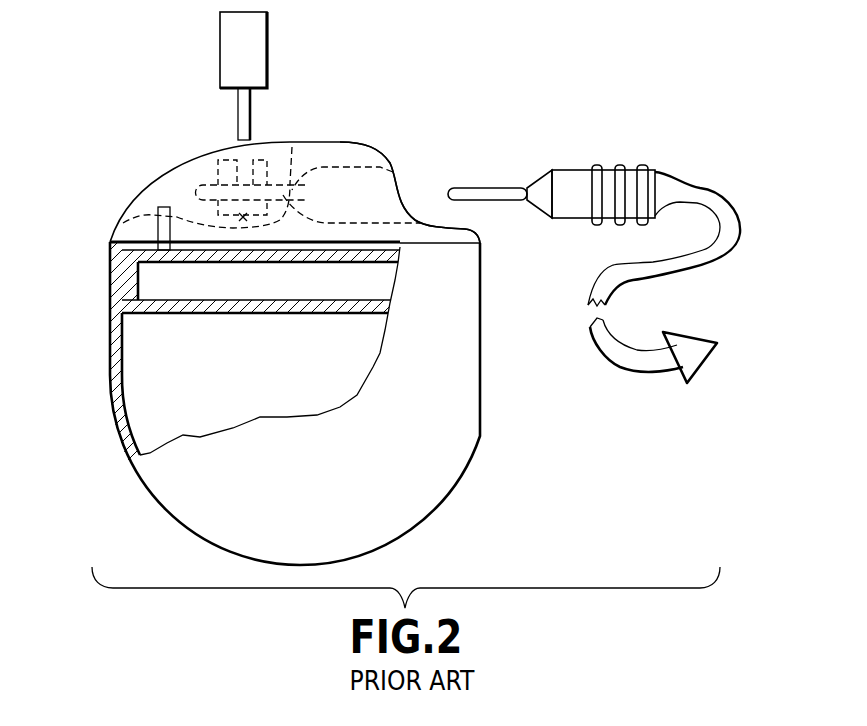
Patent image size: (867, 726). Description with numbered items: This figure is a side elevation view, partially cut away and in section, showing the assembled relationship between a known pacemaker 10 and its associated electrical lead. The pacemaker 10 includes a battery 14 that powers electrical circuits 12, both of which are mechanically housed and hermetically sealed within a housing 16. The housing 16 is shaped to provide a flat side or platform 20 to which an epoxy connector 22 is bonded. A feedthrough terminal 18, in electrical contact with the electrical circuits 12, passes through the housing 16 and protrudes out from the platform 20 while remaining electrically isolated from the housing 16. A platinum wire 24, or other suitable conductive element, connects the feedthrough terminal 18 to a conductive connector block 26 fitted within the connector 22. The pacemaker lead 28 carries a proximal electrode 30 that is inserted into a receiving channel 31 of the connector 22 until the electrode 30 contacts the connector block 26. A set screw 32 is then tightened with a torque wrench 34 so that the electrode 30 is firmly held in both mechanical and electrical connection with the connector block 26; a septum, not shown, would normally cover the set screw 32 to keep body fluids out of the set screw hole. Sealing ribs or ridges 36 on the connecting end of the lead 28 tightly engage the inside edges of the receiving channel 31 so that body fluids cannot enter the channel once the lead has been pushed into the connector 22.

The pacemaker 10 is at (160, 148).
The electrical circuits 12 is at (153, 278).
The battery 14 is at (143, 383).
The housing 16 is at (463, 372).
The feedthrough terminal 18 is at (123, 223).
The platform 20 is at (410, 242).
The epoxy connector 22 is at (145, 197).
The platinum wire 24 is at (285, 210).
The connector block 26 is at (292, 147).
The pacemaker lead 28 is at (590, 300).
The proximal electrode 30 is at (498, 187).
The receiving channel 31 is at (400, 163).
The set screw 32 is at (239, 149).
The torque wrench 34 is at (267, 64).
The sealing ribs 36 is at (640, 165).